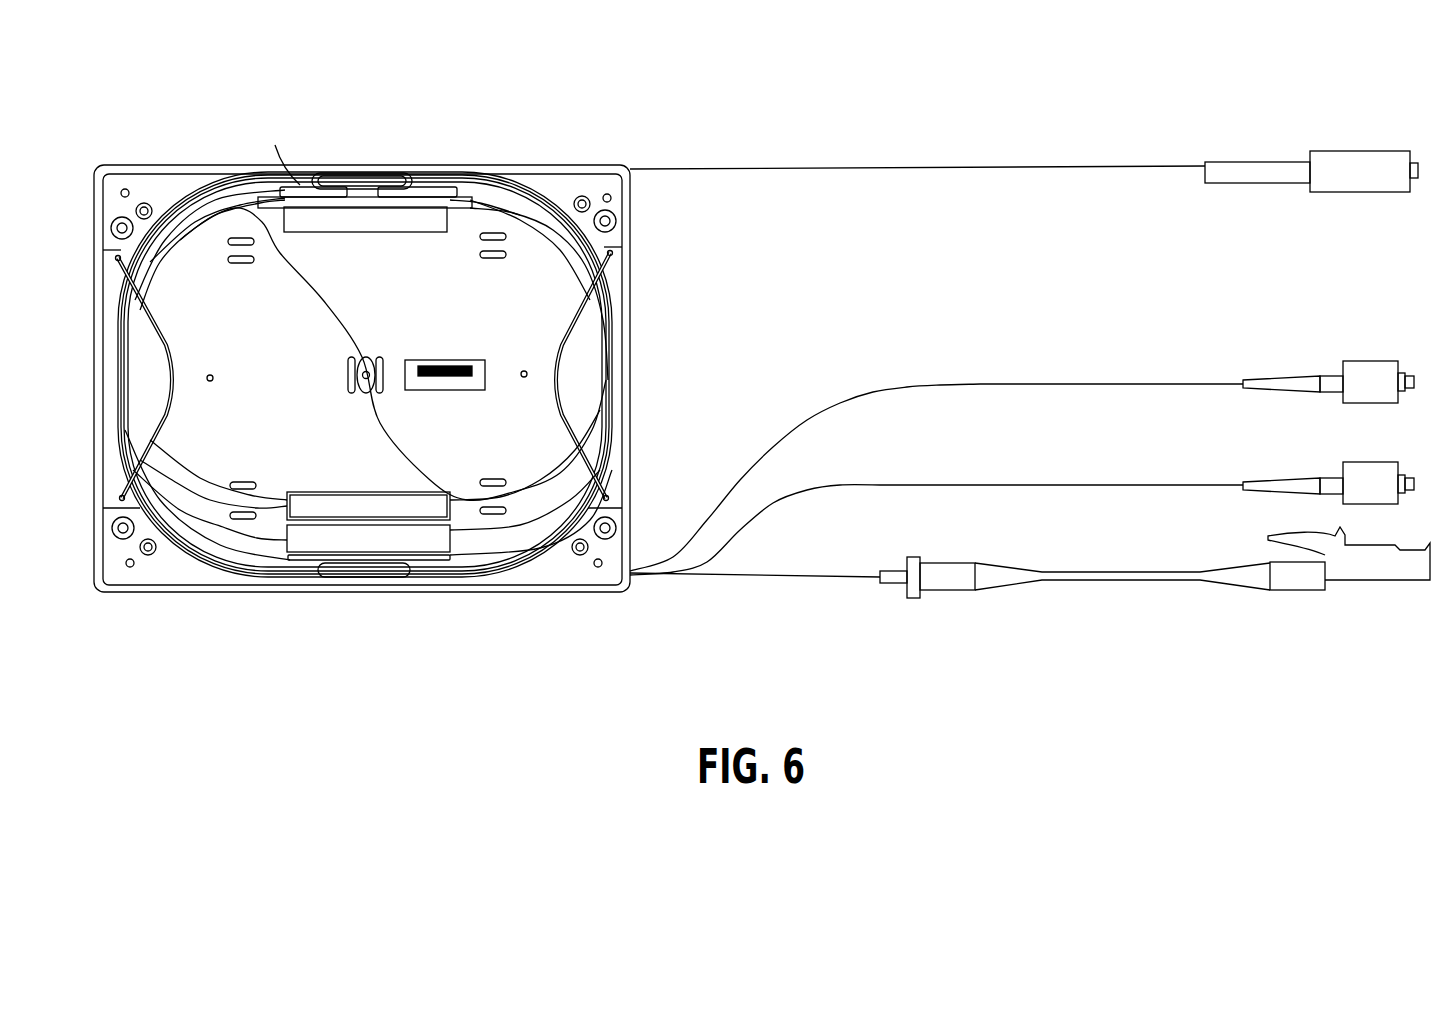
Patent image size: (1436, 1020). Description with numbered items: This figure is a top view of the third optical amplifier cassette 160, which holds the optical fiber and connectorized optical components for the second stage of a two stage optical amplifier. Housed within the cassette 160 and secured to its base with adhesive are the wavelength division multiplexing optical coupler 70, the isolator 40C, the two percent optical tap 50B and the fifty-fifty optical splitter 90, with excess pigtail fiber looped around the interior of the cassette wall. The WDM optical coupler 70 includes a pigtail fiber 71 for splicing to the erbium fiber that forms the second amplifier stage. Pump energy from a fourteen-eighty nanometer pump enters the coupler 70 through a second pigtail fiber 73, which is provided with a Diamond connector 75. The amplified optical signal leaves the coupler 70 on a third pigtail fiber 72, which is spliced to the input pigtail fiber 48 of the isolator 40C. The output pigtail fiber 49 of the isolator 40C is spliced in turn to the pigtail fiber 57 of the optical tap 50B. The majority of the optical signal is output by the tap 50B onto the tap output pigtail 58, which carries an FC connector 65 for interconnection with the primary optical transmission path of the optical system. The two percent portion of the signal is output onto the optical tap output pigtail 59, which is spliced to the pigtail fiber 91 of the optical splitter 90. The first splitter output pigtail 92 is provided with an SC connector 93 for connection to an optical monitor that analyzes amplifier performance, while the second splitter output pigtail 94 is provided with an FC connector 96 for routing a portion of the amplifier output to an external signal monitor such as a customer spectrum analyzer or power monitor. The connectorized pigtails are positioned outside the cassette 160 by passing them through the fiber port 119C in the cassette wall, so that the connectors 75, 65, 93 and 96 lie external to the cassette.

The third optical amplifier cassette 160 is at (445, 663).
The fiber port 119C is at (632, 165).
The pigtail fiber of optical splitter 91 is at (208, 198).
The 50:50 optical splitter 90 is at (432, 200).
The second splitter output pigtail 94 is at (518, 192).
The first splitter output pigtail 92 is at (487, 200).
The 1480/1550 WDM optical coupler 70 is at (300, 205).
The pigtail fiber 71 is at (217, 220).
The third pigtail fiber 72 is at (180, 235).
The second pigtail fiber 73 is at (517, 222).
The pigtail fiber of optical tap 57 is at (200, 513).
The input pigtail fiber of isolator 48 is at (287, 513).
The isolator 40C is at (307, 492).
The output pigtail fiber of isolator 49 is at (467, 497).
The tap output pigtail 58 is at (510, 530).
The optical tap output pigtail 59 is at (245, 545).
The 2% optical tap 50B is at (300, 540).
The SC connector 93 is at (1397, 151).
The FC connector 65 is at (1360, 374).
The FC connector 96 is at (1373, 477).
The Diamond connector 75 is at (1373, 577).